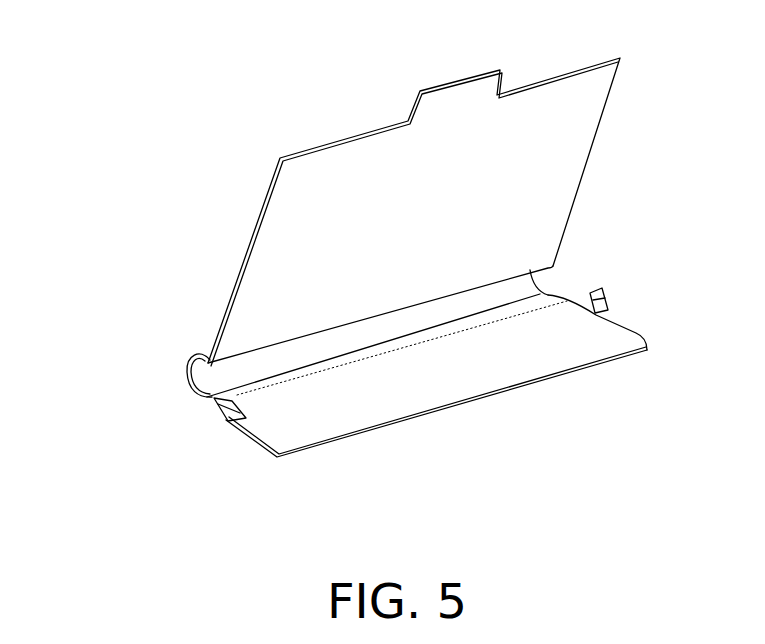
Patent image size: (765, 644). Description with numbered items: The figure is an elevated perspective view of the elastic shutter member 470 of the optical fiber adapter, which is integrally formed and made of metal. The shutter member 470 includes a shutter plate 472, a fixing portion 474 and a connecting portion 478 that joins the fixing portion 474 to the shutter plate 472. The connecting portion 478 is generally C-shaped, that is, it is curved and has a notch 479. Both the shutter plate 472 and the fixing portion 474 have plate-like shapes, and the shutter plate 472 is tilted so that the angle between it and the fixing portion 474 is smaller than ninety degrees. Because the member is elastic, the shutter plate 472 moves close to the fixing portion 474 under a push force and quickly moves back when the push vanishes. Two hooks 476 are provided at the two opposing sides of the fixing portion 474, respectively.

The shutter member 470 is at (118, 117).
The shutter plate 472 is at (558, 175).
The fixing portion 474 is at (572, 353).
The hooks 476 is at (214, 409).
The connecting portion 478 is at (203, 372).
The notch 479 is at (270, 362).